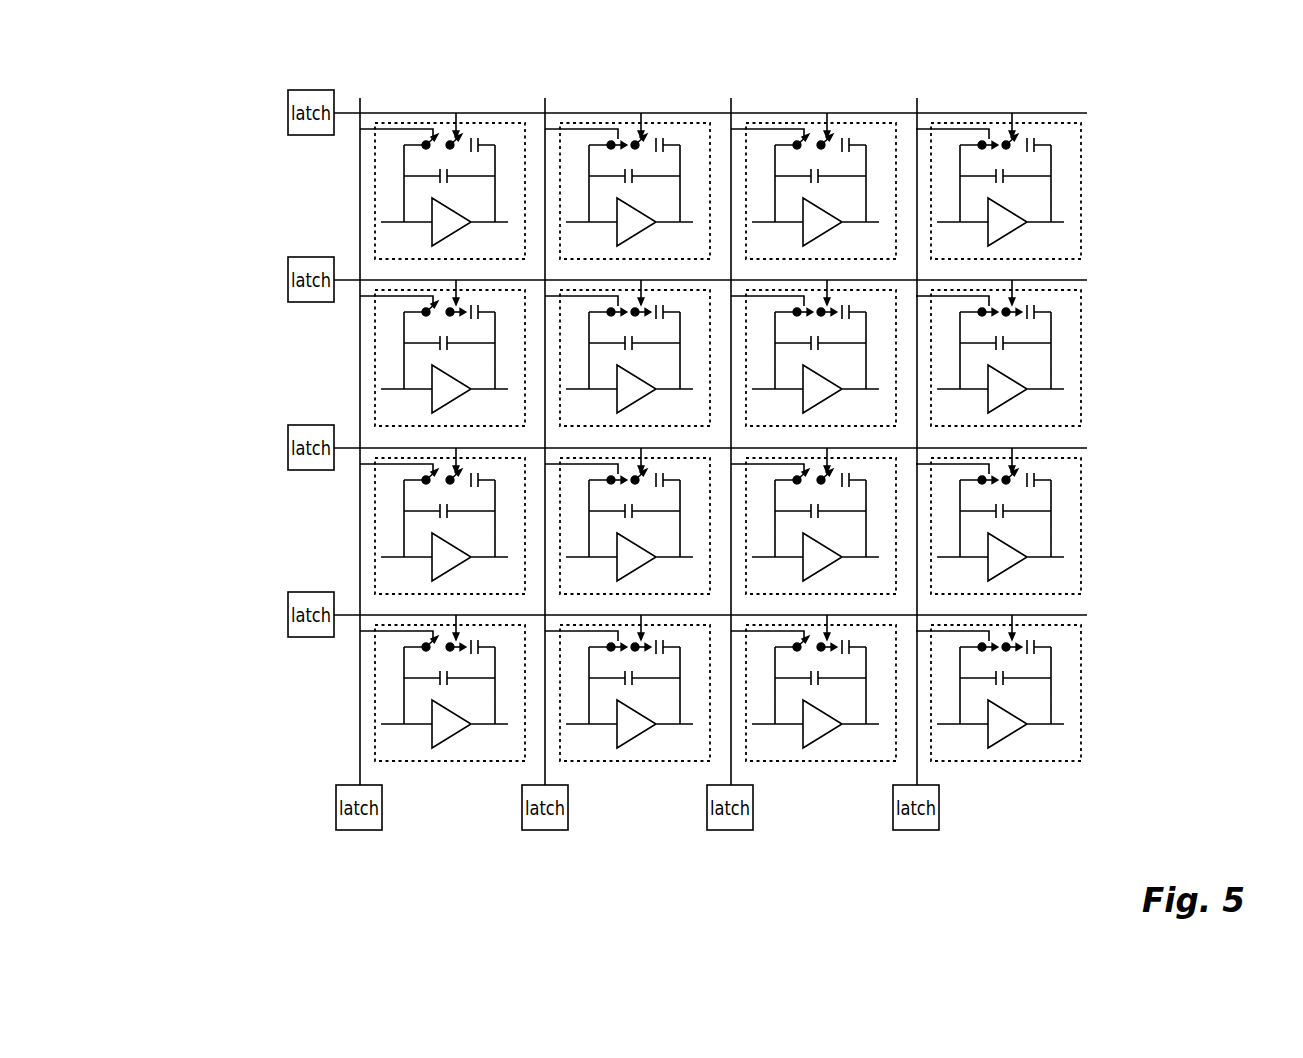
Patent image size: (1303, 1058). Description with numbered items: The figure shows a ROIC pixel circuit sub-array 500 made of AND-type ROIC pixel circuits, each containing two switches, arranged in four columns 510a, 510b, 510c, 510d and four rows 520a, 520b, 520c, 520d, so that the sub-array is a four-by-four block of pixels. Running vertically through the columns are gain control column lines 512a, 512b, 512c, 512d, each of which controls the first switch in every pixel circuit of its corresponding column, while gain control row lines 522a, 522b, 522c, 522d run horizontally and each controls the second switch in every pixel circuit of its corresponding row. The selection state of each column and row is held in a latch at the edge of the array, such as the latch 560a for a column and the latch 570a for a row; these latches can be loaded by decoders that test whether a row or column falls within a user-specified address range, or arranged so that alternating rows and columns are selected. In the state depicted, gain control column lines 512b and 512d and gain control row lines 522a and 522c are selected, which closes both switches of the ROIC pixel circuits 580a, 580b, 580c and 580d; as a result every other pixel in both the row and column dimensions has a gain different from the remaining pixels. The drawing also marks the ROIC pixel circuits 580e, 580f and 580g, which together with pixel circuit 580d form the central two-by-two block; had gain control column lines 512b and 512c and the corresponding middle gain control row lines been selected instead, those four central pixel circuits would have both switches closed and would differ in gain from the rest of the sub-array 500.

The ROIC pixel circuit sub-array 500 is at (1232, 103).
The column 510a is at (420, 108).
The column 510b is at (620, 108).
The column 510c is at (796, 108).
The column 510d is at (965, 108).
The gain control column line 512a is at (359, 760).
The gain control column line 512b is at (545, 768).
The gain control column line 512c is at (733, 770).
The gain control column line 512d is at (918, 770).
The row 520a is at (633, 661).
The row 520b is at (633, 494).
The row 520c is at (633, 326).
The row 520d is at (633, 159).
The gain control row line 522a is at (344, 618).
The gain control row line 522b is at (352, 451).
The gain control row line 522c is at (352, 283).
The gain control row line 522d is at (352, 116).
The latch 560a is at (336, 812).
The latch 570a is at (287, 608).
The ROIC pixel circuit 580a is at (585, 748).
The ROIC pixel circuit 580b is at (1072, 682).
The ROIC pixel circuit 580c is at (1072, 318).
The ROIC pixel circuit 580d is at (691, 300).
The ROIC pixel circuit 580e is at (880, 413).
The ROIC pixel circuit 580f is at (680, 587).
The ROIC pixel circuit 580g is at (886, 512).